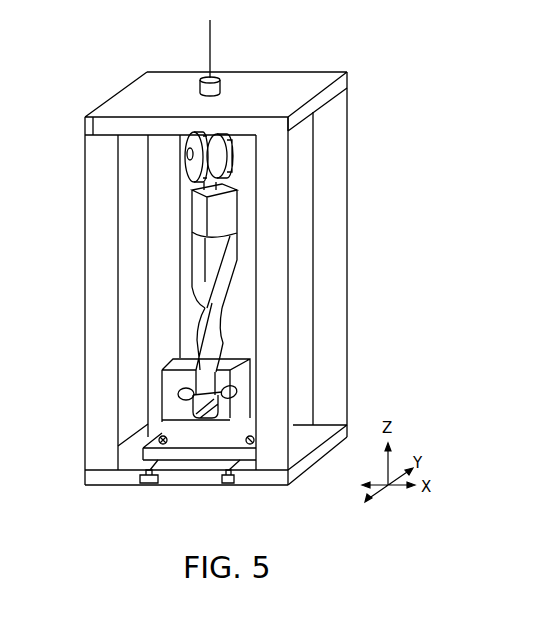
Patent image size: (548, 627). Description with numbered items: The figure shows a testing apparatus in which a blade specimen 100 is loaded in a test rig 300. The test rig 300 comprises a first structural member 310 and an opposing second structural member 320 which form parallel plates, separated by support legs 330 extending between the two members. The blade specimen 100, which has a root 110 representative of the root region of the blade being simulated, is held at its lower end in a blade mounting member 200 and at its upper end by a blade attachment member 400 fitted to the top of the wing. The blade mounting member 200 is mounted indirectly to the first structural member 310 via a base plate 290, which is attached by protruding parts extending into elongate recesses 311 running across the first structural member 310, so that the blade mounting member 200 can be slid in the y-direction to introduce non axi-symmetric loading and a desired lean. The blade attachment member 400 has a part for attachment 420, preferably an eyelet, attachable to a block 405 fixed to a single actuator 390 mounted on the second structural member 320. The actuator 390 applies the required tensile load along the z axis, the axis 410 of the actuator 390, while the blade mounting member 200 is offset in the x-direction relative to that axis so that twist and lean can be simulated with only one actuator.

The blade specimen 100 is at (301, 278).
The root 110 is at (220, 347).
The blade mounting member 200 is at (258, 395).
The base plate 290 is at (250, 452).
The test rig 300 is at (274, 294).
The first structural member 310 is at (200, 486).
The elongate recesses 311 is at (152, 483).
The second structural member 320 is at (348, 73).
The support legs 330 is at (340, 282).
The actuator 390 is at (200, 82).
The blade attachment member 400 is at (190, 105).
The block 405 is at (180, 130).
The axis of the actuator 410 is at (211, 48).
The part for attachment 420 is at (242, 130).